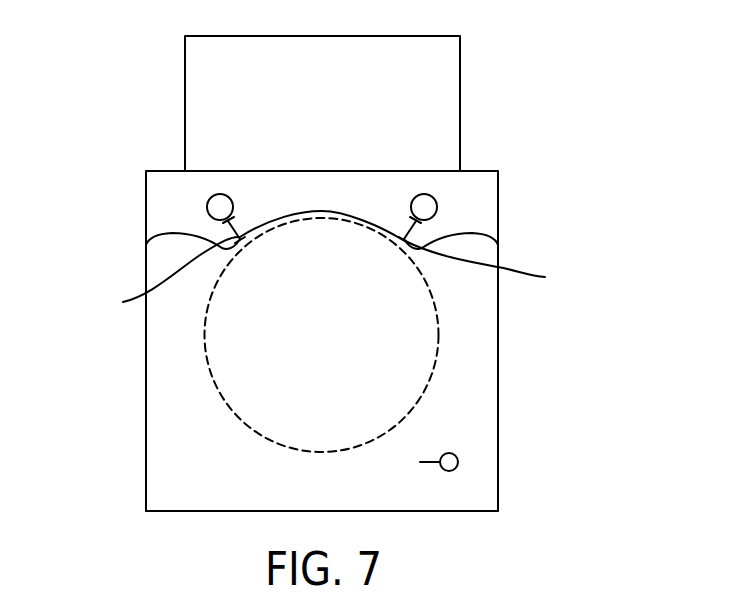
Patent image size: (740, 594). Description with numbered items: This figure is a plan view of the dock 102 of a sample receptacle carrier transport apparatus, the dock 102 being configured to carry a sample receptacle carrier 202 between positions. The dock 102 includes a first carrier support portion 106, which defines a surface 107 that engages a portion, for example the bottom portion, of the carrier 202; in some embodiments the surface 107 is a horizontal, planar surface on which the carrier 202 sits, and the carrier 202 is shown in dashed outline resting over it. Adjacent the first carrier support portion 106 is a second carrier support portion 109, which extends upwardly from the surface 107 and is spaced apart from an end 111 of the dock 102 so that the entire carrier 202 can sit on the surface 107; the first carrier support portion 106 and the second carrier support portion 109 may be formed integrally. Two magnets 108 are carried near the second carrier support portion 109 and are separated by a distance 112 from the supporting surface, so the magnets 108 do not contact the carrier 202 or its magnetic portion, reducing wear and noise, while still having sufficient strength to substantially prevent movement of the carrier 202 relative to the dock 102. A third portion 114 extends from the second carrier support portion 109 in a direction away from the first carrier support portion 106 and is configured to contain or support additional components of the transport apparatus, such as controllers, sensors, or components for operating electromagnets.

The dock 102 is at (553, 138).
The first carrier support portion 106 is at (175, 470).
The surface 107 is at (458, 465).
The magnets 108 is at (215, 209).
The second carrier support portion 109 is at (255, 185).
The end 111 is at (185, 511).
The distance 112 is at (335, 264).
The third portion 114 is at (438, 92).
The sample receptacle carrier 202 is at (423, 398).